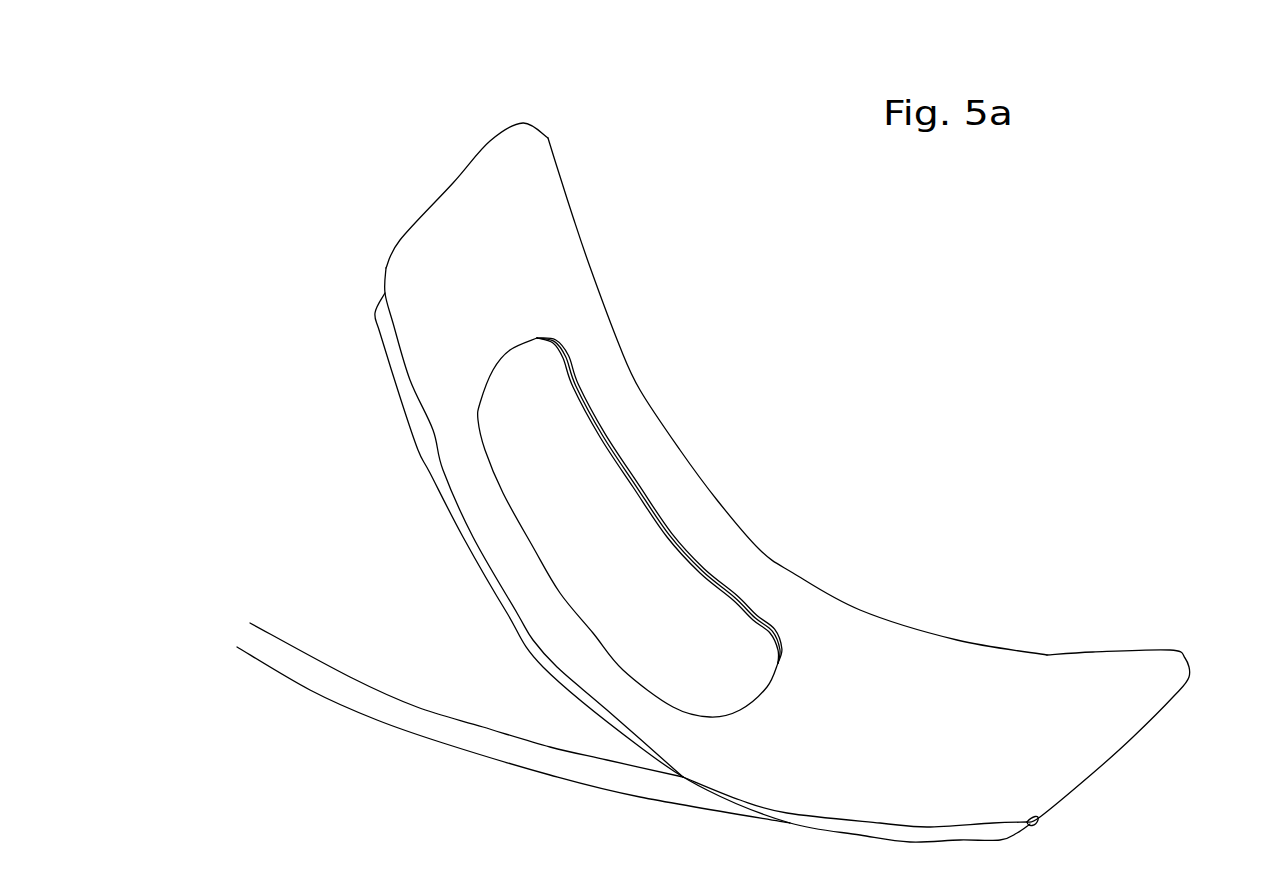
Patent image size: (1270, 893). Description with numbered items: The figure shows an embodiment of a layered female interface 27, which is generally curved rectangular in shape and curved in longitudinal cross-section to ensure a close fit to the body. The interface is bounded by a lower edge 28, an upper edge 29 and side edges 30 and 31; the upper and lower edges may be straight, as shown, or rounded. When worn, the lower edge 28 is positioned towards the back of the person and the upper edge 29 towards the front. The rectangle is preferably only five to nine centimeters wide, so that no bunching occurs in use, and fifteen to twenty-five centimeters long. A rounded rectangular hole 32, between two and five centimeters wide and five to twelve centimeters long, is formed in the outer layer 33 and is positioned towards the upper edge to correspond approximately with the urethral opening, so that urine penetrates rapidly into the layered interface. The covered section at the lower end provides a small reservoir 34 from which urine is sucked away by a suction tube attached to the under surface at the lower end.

The layered female interface 27 is at (740, 429).
The lower edge 28 is at (1133, 737).
The upper edge 29 is at (452, 183).
The side edge 30 is at (717, 500).
The side edge 31 is at (535, 642).
The rounded rectangular hole 32 is at (681, 504).
The outer layer 33 is at (733, 600).
The reservoir 34 is at (923, 725).